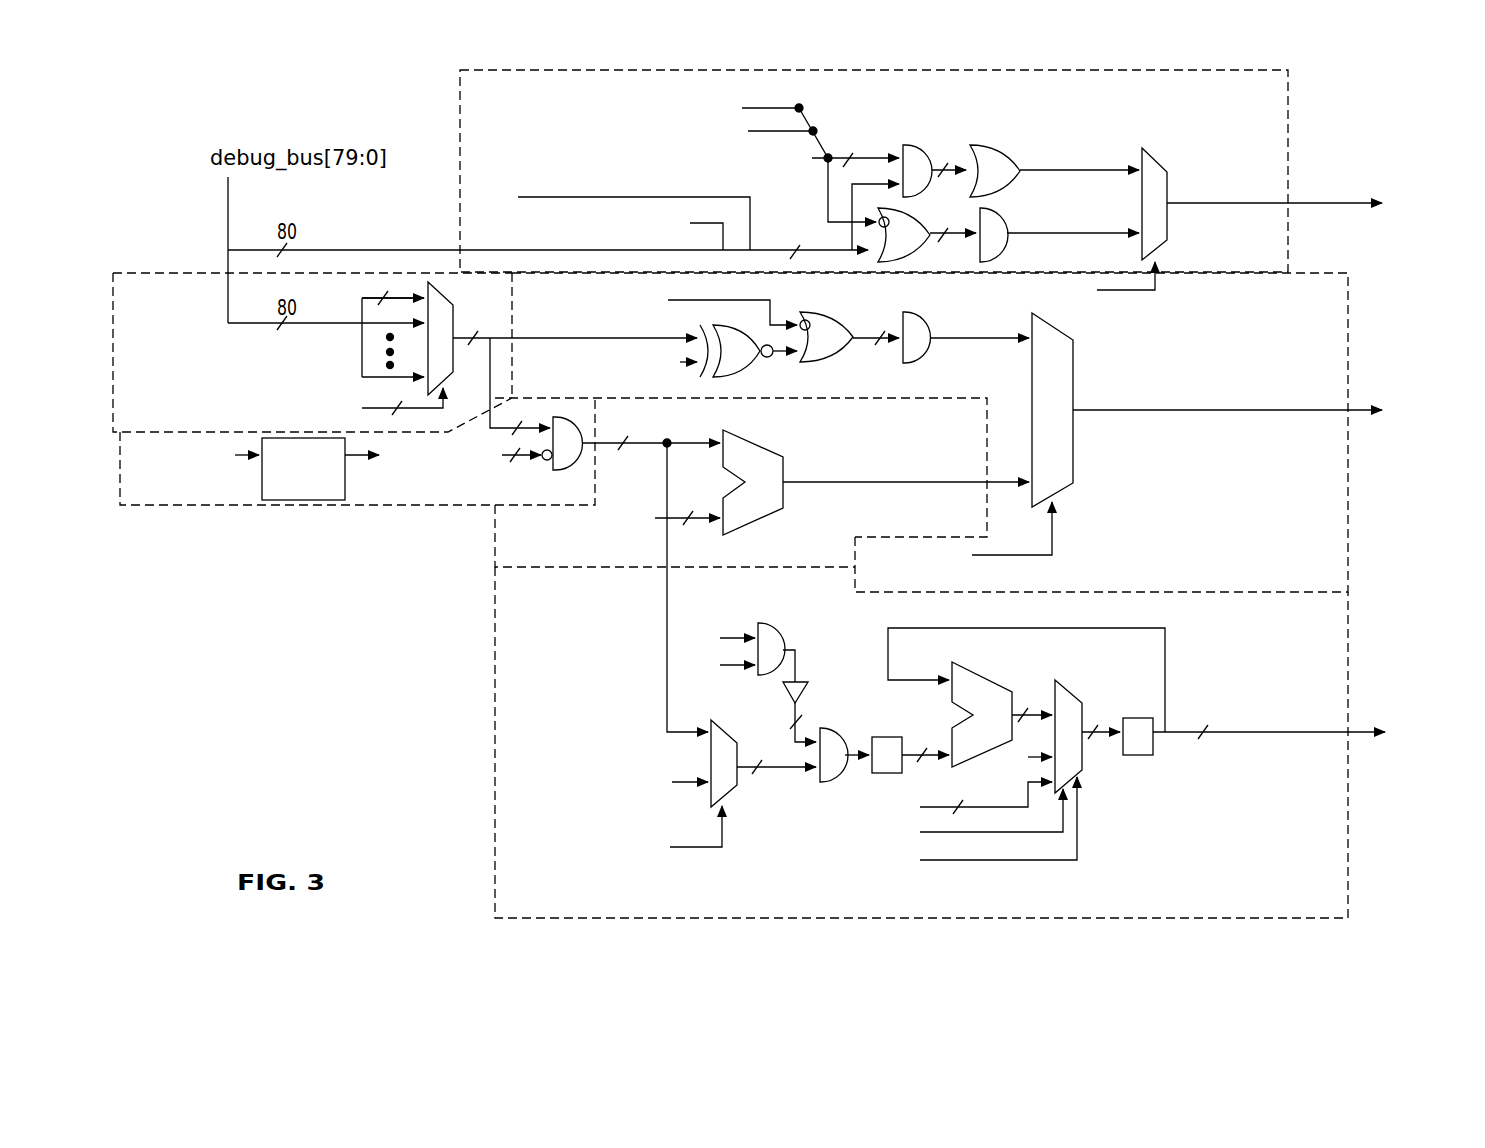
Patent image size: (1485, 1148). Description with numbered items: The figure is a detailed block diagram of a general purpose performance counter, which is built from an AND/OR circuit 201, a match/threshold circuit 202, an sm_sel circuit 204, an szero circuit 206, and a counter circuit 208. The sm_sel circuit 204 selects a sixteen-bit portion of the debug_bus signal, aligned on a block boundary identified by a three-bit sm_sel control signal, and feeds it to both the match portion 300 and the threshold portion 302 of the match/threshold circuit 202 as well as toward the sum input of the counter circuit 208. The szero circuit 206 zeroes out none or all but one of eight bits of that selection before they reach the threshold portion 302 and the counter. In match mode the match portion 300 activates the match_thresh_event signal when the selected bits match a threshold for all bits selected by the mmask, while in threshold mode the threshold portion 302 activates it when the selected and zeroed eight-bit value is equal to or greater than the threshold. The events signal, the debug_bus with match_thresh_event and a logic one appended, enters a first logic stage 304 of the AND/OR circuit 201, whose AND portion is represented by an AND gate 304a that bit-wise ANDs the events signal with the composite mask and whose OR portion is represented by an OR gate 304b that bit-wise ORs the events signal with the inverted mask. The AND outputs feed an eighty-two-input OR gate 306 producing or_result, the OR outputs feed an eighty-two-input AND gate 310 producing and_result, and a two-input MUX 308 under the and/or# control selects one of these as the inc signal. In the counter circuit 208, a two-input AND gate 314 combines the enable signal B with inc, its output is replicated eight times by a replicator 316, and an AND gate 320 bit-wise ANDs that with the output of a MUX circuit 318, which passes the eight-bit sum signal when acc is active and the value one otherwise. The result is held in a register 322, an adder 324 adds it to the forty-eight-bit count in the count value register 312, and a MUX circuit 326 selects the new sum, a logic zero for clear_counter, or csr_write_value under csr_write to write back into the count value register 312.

The AND/OR circuit 201 is at (1290, 163).
The match/threshold circuit 202 is at (1382, 349).
The sm_sel circuit 204 is at (207, 273).
The szero circuit 206 is at (253, 508).
The counter circuit 208 is at (1350, 790).
The match portion 300 is at (1303, 272).
The threshold portion 302 is at (493, 542).
The first logic stage 304 is at (895, 128).
The AND gate 304a is at (905, 145).
The OR gate 304b is at (908, 252).
The 82-input OR gate 306 is at (990, 145).
The two-input MUX 308 is at (1157, 160).
The 82-input AND gate 310 is at (1010, 243).
The count value register 312 is at (1137, 755).
The two-input AND gate 314 is at (767, 623).
The 8x replicator 316 is at (807, 680).
The MUX circuit 318 is at (720, 727).
The AND gate 320 is at (827, 728).
The register 322 is at (882, 737).
The adder 324 is at (978, 672).
The MUX circuit 326 is at (1067, 687).